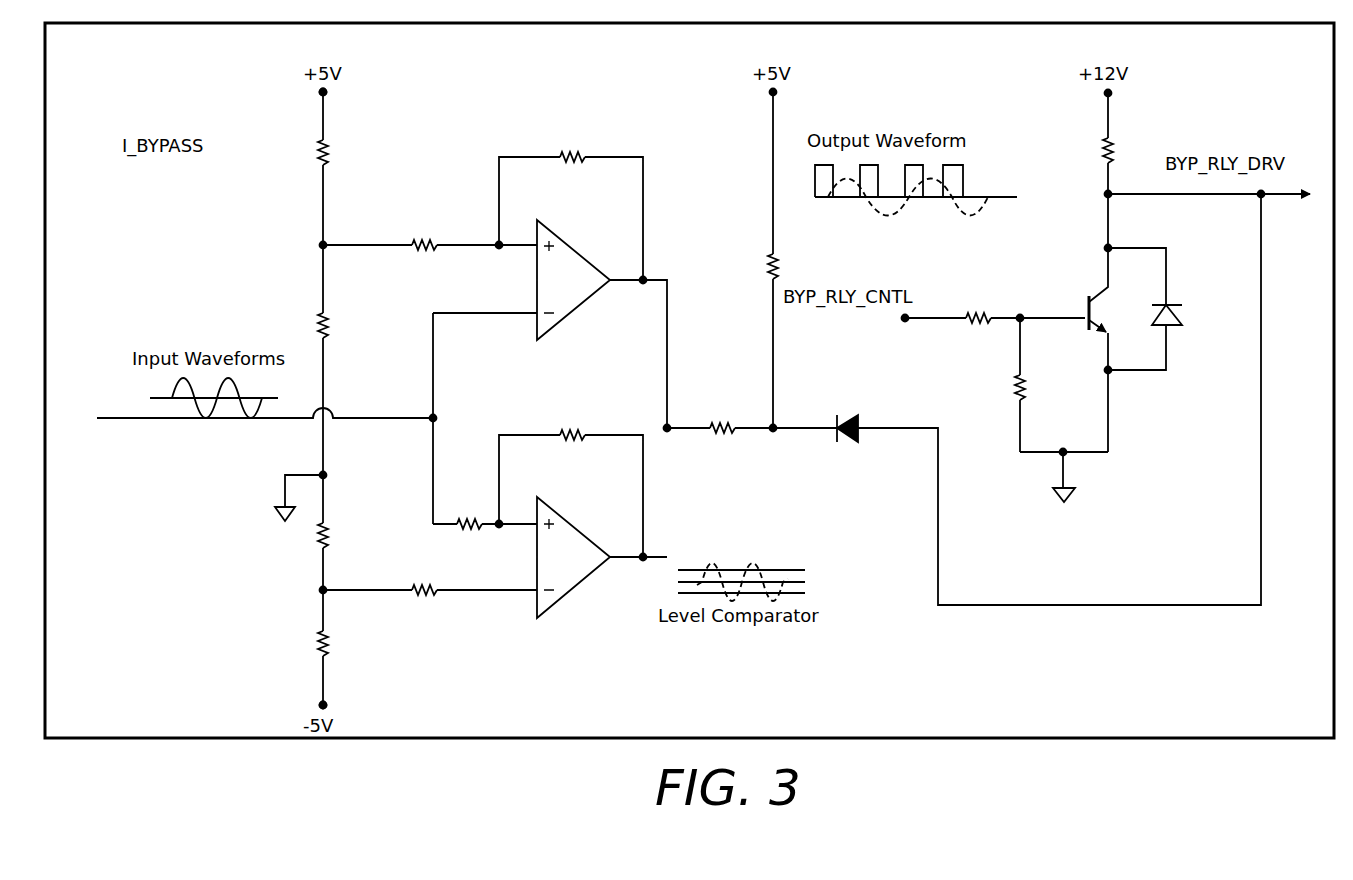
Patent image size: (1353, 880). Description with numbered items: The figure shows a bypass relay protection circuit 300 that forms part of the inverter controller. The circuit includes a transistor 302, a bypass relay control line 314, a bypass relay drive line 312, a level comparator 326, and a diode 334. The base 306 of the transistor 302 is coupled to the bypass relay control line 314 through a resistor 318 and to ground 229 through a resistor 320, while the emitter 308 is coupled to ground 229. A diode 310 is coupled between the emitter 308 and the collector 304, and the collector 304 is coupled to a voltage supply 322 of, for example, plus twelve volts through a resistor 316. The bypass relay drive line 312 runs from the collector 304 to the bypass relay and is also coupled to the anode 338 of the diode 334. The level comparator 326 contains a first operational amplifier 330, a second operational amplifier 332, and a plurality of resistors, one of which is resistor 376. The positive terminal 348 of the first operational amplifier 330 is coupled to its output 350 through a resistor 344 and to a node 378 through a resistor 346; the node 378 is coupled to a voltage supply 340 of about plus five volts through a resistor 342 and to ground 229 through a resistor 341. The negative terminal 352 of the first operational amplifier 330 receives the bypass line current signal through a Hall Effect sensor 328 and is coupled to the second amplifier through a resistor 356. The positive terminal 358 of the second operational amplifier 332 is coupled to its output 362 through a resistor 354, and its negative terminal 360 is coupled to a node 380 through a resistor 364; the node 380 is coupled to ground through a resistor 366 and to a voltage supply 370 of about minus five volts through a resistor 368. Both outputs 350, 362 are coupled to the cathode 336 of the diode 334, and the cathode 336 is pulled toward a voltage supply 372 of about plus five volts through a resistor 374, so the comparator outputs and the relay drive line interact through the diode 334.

The ground 229 is at (285, 507).
The bypass relay protection circuit 300 is at (1224, 619).
The transistor 302 is at (1082, 300).
The collector 304 is at (1097, 285).
The base 306 is at (1082, 318).
The emitter 308 is at (1100, 331).
The diode 310 is at (1184, 310).
The bypass relay drive line 312 is at (1283, 200).
The bypass relay control line 314 is at (904, 320).
The resistor 316 is at (1115, 148).
The resistor 318 is at (975, 322).
The resistor 320 is at (1018, 392).
The voltage supply 322 is at (1110, 92).
The level comparator 326 is at (704, 519).
The Hall Effect sensor 328 is at (73, 443).
The first operational amplifier 330 is at (556, 330).
The second operational amplifier 332 is at (556, 605).
The diode 334 is at (838, 445).
The cathode 336 is at (836, 432).
The anode 338 is at (849, 427).
The voltage supply 340 is at (325, 91).
The resistor 341 is at (320, 325).
The resistor 342 is at (330, 150).
The resistor 344 is at (575, 155).
The resistor 346 is at (420, 243).
The positive terminal 348 is at (530, 250).
The output 350 is at (618, 275).
The negative terminal 352 is at (530, 318).
The resistor 354 is at (568, 433).
The resistor 356 is at (468, 525).
The positive terminal 358 is at (530, 527).
The negative terminal 360 is at (530, 590).
The output 362 is at (618, 550).
The resistor 364 is at (428, 592).
The resistor 366 is at (322, 537).
The resistor 368 is at (322, 650).
The voltage supply 370 is at (325, 704).
The voltage supply 372 is at (775, 90).
The resistor 374 is at (770, 263).
The resistor 376 is at (720, 432).
The node 378 is at (321, 243).
The node 380 is at (321, 592).